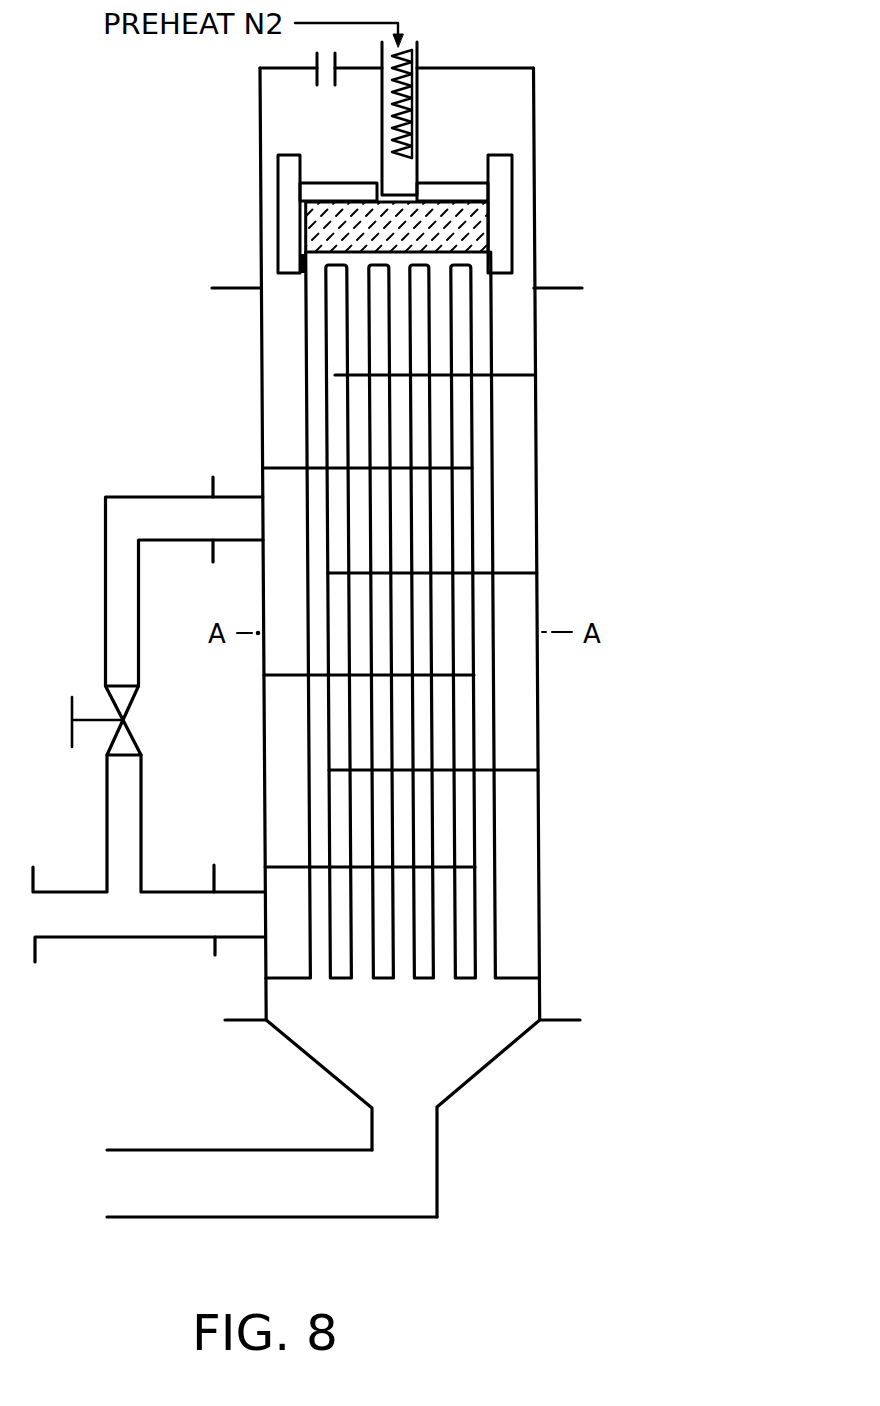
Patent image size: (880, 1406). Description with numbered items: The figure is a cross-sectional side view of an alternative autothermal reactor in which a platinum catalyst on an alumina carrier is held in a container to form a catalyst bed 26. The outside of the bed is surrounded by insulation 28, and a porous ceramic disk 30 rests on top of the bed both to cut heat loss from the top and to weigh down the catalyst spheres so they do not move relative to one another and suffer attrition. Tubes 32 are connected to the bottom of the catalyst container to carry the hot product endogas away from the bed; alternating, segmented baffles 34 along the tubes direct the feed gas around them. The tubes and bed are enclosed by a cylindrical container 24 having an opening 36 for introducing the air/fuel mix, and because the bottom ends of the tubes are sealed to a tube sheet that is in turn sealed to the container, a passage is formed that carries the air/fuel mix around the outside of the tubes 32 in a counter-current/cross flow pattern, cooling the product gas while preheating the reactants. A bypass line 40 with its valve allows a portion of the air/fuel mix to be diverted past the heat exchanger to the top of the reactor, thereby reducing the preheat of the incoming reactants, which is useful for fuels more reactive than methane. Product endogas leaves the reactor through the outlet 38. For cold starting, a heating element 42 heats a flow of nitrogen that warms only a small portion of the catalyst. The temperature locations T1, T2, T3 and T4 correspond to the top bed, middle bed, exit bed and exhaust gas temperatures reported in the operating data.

The cylindrical container 24 is at (537, 528).
The catalyst bed 26 is at (485, 205).
The insulation 28 is at (510, 226).
The porous ceramic disk 30 is at (330, 183).
The tubes 32 is at (315, 396).
The baffles 34 is at (508, 768).
The opening 36 is at (270, 913).
The outlet 38 is at (332, 1195).
The bypass line 40 is at (106, 603).
The heating element 42 is at (402, 98).
The top bed temperature T1 is at (400, 203).
The middle bed temperature T2 is at (362, 231).
The exit bed temperature T3 is at (317, 263).
The exhaust gas temperature T4 is at (255, 1183).